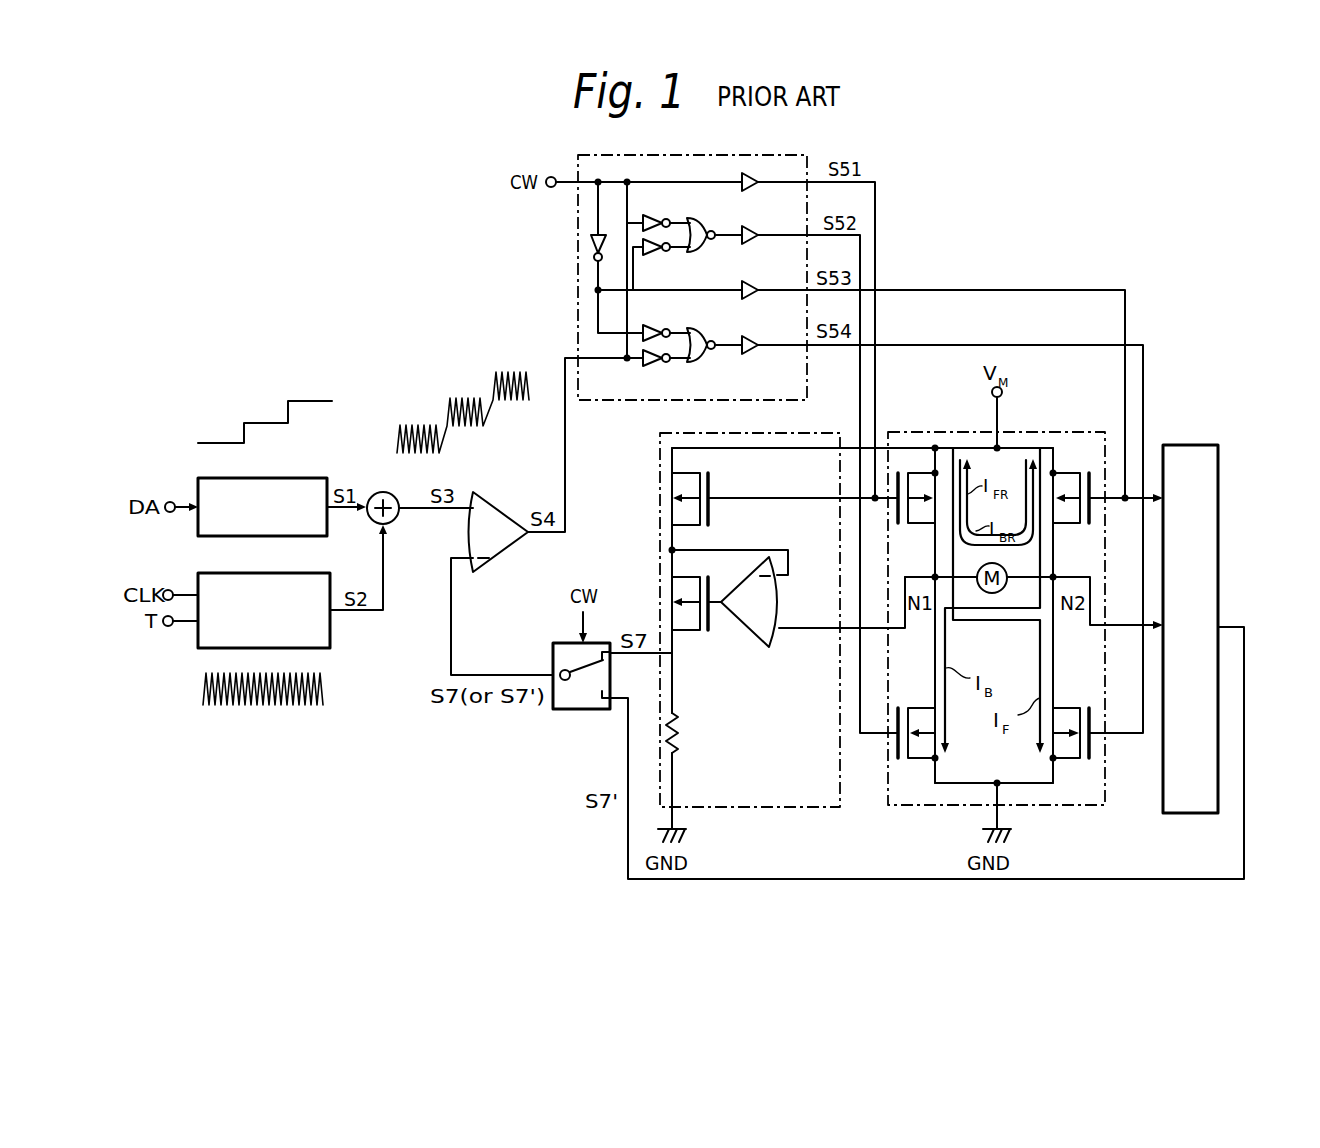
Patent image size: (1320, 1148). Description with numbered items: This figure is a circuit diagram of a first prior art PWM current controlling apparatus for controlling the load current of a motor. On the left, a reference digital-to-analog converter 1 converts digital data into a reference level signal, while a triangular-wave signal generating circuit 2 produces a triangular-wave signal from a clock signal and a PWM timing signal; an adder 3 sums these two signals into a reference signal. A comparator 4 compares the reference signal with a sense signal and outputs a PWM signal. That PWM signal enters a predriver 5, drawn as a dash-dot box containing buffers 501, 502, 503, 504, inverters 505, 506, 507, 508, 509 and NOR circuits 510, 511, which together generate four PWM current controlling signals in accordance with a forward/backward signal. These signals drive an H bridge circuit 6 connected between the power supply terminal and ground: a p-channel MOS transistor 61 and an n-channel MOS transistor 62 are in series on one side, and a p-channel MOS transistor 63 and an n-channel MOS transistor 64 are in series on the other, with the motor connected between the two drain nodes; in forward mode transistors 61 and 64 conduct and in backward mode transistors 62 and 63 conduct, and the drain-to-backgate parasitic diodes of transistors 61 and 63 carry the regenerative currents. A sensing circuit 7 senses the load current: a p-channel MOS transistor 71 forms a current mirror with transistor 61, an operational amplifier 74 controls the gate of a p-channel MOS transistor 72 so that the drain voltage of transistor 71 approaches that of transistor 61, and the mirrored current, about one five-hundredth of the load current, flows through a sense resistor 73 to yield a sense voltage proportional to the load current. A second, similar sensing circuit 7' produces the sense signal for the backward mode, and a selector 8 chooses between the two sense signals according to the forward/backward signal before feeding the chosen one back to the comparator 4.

The reference digital-to-analog converter 1 is at (245, 478).
The triangular-wave signal generating circuit 2 is at (248, 573).
The adder 3 is at (379, 492).
The comparator 4 is at (501, 502).
The predriver 5 is at (770, 156).
The H bridge circuit 6 is at (1073, 432).
The sensing circuit 7 is at (753, 604).
The sensing circuit 7' is at (1190, 602).
The selector 8 is at (553, 657).
The p-channel MOS transistor 61 is at (918, 525).
The n-channel MOS transistor 62 is at (918, 708).
The p-channel MOS transistor 63 is at (1070, 525).
The n-channel MOS transistor 64 is at (1070, 708).
The p-channel MOS transistor 71 is at (709, 486).
The p-channel MOS transistor 72 is at (709, 592).
The sense resistor 73 is at (678, 715).
The operational amplifier 74 is at (745, 640).
The buffer 501 is at (750, 191).
The buffer 502 is at (750, 244).
The buffer 503 is at (750, 299).
The buffer 504 is at (750, 354).
The inverter 505 is at (590, 240).
The inverter 506 is at (658, 204).
The inverter 507 is at (653, 255).
The inverter 508 is at (658, 313).
The inverter 509 is at (653, 366).
The NOR circuit 510 is at (693, 221).
The NOR circuit 511 is at (693, 330).